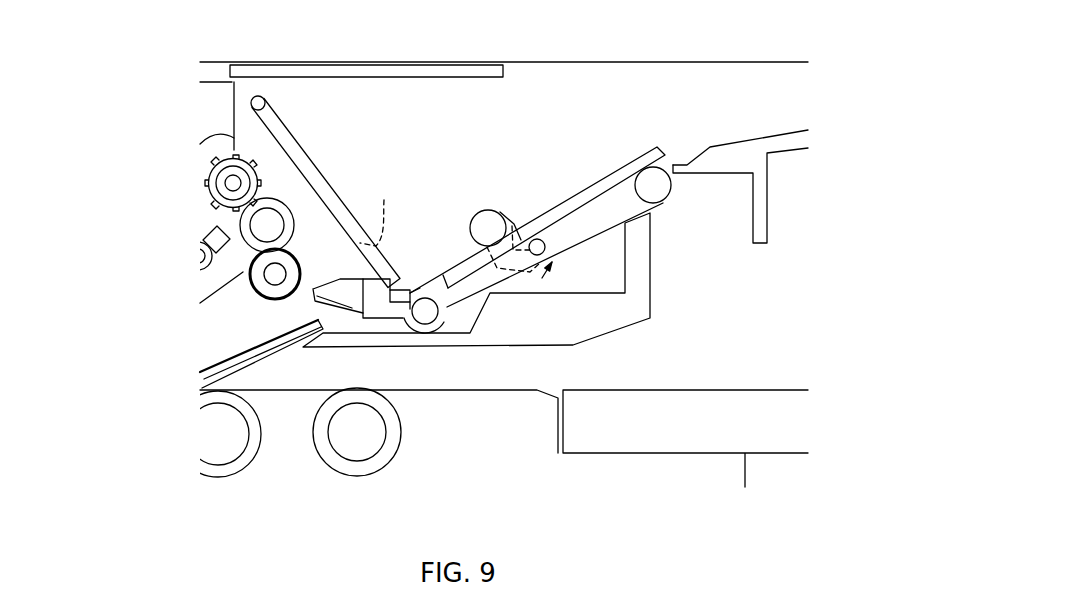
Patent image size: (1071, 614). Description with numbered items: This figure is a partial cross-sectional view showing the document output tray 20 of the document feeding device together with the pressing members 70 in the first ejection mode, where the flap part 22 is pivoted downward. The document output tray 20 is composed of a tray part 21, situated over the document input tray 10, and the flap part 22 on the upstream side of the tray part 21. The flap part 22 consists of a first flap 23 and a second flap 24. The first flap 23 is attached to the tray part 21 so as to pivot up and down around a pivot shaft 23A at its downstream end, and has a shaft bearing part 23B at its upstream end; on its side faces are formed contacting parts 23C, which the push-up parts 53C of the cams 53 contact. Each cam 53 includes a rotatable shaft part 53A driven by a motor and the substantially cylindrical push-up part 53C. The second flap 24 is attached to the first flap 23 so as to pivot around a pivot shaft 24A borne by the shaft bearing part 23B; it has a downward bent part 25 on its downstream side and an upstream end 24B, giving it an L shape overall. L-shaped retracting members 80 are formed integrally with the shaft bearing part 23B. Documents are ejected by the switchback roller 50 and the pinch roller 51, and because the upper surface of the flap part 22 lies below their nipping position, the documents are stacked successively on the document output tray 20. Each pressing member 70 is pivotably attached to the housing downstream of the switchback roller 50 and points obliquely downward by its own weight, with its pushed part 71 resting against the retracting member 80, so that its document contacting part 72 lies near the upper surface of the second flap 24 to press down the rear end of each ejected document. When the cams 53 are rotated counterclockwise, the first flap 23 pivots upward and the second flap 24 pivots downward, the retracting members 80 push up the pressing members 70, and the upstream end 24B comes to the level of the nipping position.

The document input tray 10 is at (747, 383).
The document output tray 20 is at (677, 112).
The tray part 21 is at (755, 128).
The flap part 22 is at (410, 147).
The first flap 23 is at (575, 227).
The pivot shaft 23A is at (662, 192).
The shaft bearing part 23B is at (430, 318).
The contacting part 23C is at (598, 182).
The second flap 24 is at (398, 304).
The pivot shaft 24A is at (433, 330).
The upstream end 24B is at (310, 290).
The bent part 25 is at (415, 278).
The switchback roller 50 is at (241, 223).
The pinch roller 51 is at (210, 165).
The cam 53 is at (515, 194).
The shaft part 53A is at (486, 218).
The push-up part 53C is at (537, 238).
The pressing member 70 is at (296, 130).
The pushed part 71 is at (403, 272).
The document contacting part 72 is at (386, 209).
The retracting member 80 is at (353, 315).